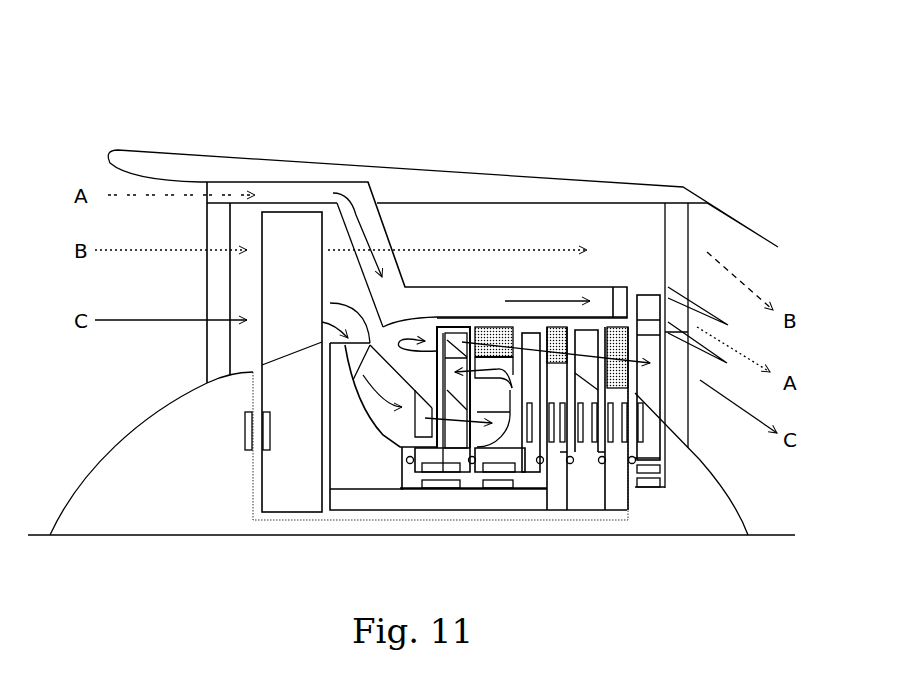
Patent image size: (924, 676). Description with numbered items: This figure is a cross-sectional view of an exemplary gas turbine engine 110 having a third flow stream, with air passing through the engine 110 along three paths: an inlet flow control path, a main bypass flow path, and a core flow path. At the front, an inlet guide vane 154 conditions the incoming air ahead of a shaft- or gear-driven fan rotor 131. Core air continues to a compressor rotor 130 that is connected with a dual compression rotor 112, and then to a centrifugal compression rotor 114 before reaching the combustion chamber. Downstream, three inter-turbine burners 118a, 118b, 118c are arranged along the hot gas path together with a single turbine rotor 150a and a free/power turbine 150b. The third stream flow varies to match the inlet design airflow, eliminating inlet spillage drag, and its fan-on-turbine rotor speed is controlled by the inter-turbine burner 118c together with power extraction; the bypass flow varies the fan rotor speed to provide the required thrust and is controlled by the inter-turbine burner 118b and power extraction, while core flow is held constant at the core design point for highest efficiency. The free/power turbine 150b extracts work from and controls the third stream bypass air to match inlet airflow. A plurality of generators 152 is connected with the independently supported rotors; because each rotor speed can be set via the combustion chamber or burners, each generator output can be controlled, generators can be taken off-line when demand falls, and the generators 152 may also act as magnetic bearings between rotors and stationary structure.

The engine 110 is at (145, 95).
The inlet guide vane 154 is at (219, 190).
The fan rotor 131 is at (297, 218).
The compressor rotor 130 is at (417, 430).
The dual compression rotor 112 is at (457, 328).
The inter-turbine burner 118a is at (493, 327).
The centrifugal compression rotor 114 is at (530, 330).
The inter-turbine burner 118b is at (560, 327).
The turbine rotor 150a is at (590, 330).
The inter-turbine burner 118c is at (620, 327).
The free/power turbine 150b is at (650, 292).
The generators 152 is at (243, 455).